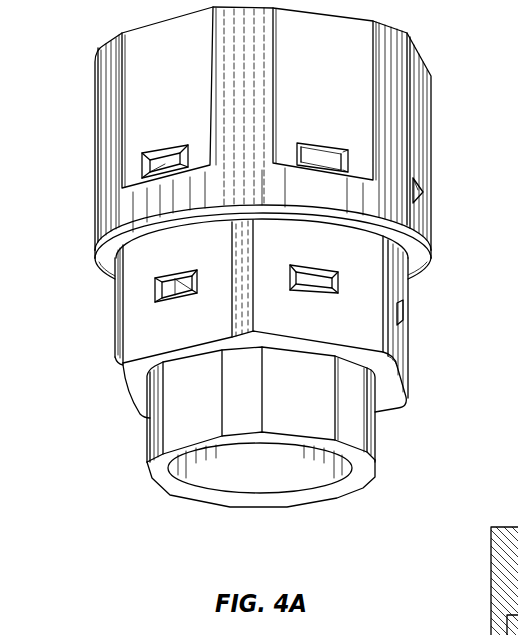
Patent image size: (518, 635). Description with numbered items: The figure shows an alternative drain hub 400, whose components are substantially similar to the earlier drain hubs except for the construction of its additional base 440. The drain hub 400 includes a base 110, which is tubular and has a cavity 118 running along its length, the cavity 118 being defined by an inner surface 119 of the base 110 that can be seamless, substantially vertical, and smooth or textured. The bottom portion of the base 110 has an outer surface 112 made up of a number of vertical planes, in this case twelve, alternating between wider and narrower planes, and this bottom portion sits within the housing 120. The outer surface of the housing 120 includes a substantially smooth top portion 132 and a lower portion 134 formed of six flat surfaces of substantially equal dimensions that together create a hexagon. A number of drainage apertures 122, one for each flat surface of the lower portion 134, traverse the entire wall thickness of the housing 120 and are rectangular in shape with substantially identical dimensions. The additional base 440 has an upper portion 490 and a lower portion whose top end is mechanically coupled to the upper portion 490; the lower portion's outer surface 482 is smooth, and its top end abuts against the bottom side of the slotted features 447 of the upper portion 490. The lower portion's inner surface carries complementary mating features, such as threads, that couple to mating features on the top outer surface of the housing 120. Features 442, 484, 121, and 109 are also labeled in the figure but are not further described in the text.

The drain hub 400 is at (124, 534).
The additional base 440 is at (439, 122).
The housing wall 442 is at (185, 109).
The slotted features 447 is at (317, 151).
The outer surface 482 is at (105, 222).
The top portion 132 is at (110, 252).
The tab 484 is at (423, 264).
The housing 120 is at (426, 362).
The drainage apertures 122 is at (178, 274).
The lower portion 134 is at (196, 331).
The lug 121 is at (128, 378).
The base 110 is at (128, 436).
The outer surface 112 is at (353, 413).
The end face 109 is at (360, 479).
The inner surface 119 is at (282, 481).
The cavity 118 is at (222, 466).
The upper portion 490 is at (482, 633).